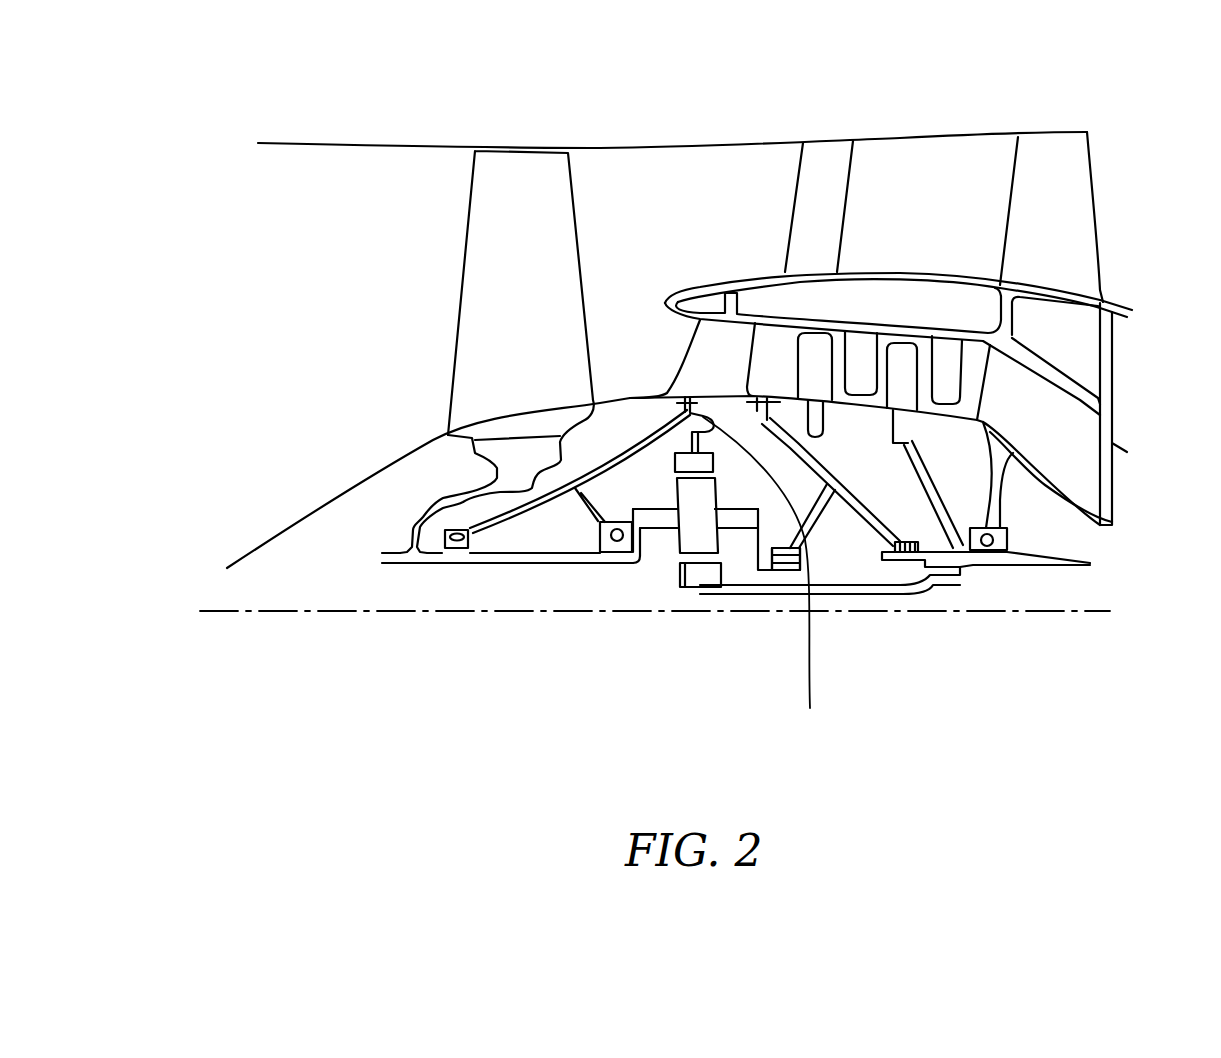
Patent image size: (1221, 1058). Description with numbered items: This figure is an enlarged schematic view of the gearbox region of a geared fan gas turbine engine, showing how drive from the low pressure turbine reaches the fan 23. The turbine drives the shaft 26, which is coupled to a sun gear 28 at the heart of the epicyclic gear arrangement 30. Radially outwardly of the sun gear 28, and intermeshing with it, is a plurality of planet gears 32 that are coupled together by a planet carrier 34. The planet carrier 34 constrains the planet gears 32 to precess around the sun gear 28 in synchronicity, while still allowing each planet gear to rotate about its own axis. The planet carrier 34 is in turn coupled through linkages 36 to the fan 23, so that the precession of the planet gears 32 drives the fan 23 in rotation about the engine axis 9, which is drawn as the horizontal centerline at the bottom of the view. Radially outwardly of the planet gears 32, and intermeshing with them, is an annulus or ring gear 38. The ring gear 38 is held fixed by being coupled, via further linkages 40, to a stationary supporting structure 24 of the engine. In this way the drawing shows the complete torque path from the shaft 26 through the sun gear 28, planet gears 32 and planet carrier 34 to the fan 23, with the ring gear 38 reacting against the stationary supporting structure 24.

The engine axis 9 is at (331, 613).
The fan 23 is at (475, 272).
The stationary supporting structure 24 is at (700, 358).
The shaft 26 is at (980, 567).
The sun gear 28 is at (700, 573).
The epicyclic gear arrangement 30 is at (652, 553).
The planet gears 32 is at (688, 543).
The planet carrier 34 is at (758, 538).
The linkages 36 is at (652, 548).
The ring gear 38 is at (695, 463).
The linkages 40 is at (761, 576).